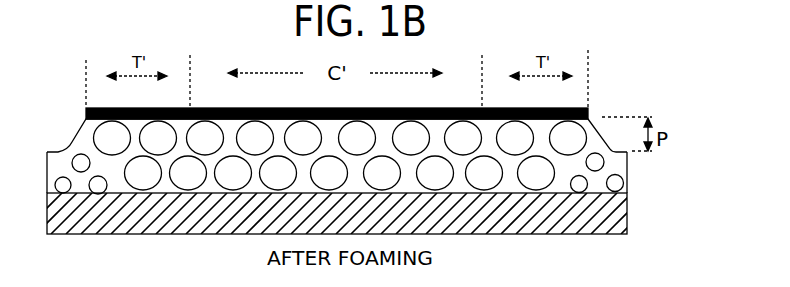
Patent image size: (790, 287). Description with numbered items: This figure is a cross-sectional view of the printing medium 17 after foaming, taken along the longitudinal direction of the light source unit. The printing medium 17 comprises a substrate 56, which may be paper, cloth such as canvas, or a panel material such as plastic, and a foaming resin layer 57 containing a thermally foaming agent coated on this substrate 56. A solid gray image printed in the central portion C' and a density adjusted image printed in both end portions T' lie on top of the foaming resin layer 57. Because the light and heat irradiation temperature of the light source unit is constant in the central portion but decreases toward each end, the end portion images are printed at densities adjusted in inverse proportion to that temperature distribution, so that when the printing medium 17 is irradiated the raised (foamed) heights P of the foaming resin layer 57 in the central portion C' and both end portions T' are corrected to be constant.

The printing medium 17 is at (600, 78).
The foaming resin layer 57 is at (608, 172).
The substrate 56 is at (608, 218).